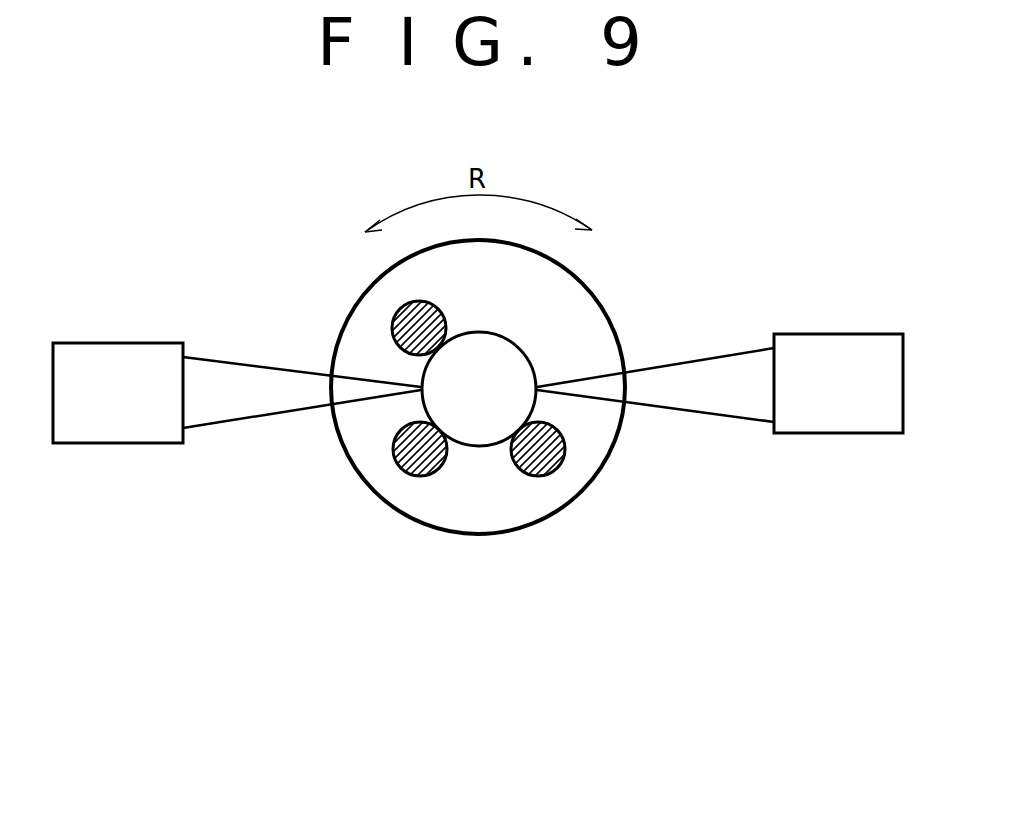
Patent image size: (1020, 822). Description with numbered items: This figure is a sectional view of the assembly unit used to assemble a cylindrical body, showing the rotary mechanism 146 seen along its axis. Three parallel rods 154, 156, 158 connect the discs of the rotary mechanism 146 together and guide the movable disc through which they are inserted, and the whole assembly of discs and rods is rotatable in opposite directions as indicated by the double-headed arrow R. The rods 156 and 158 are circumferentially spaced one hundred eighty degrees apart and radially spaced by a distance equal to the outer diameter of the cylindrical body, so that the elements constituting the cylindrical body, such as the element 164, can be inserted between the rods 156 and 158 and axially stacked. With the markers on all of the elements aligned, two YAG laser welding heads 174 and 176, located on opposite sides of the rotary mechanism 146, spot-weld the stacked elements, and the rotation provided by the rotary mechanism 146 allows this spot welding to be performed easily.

The rotary mechanism 146 is at (481, 537).
The element 164 is at (503, 345).
The rod 158 is at (392, 314).
The rod 154 is at (392, 465).
The rod 156 is at (567, 463).
The welding head 176 is at (122, 343).
The welding head 174 is at (843, 334).